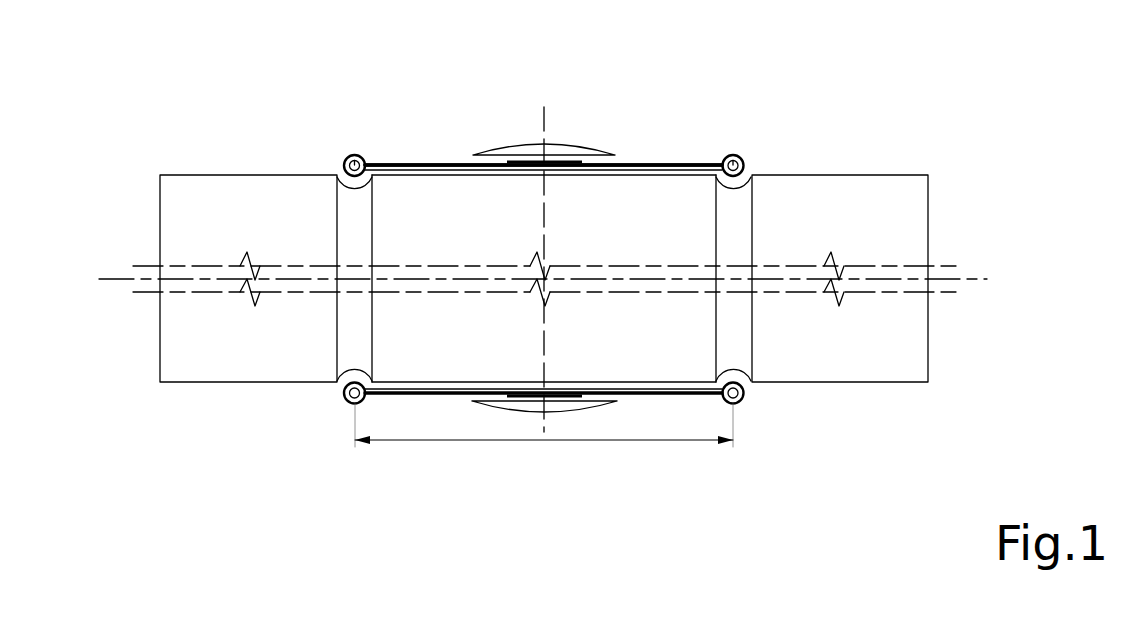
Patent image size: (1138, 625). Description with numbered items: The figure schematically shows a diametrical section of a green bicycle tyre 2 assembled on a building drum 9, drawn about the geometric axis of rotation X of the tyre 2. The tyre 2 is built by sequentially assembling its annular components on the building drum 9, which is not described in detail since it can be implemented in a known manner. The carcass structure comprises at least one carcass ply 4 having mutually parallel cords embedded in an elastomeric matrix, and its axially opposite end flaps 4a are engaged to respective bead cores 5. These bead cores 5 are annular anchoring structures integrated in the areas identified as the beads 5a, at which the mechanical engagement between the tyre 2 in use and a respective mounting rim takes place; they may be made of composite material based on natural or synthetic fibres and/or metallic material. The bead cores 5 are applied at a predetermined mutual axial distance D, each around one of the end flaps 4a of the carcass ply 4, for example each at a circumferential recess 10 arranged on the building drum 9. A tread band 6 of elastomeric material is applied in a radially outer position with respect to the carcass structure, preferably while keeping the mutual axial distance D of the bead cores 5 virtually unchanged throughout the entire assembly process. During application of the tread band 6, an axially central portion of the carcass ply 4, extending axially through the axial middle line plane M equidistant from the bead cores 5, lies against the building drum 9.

The tyre 2 is at (527, 255).
The carcass ply 4 is at (543, 220).
The end flaps 4a is at (450, 162).
The bead cores 5 is at (527, 255).
The beads 5a is at (348, 400).
The tread band 6 is at (522, 151).
The building drum 9 is at (892, 208).
The circumferential recess 10 is at (733, 188).
The geometric axis of rotation X is at (790, 278).
The axial middle line plane M is at (545, 125).
The mutual axial distance D is at (548, 438).